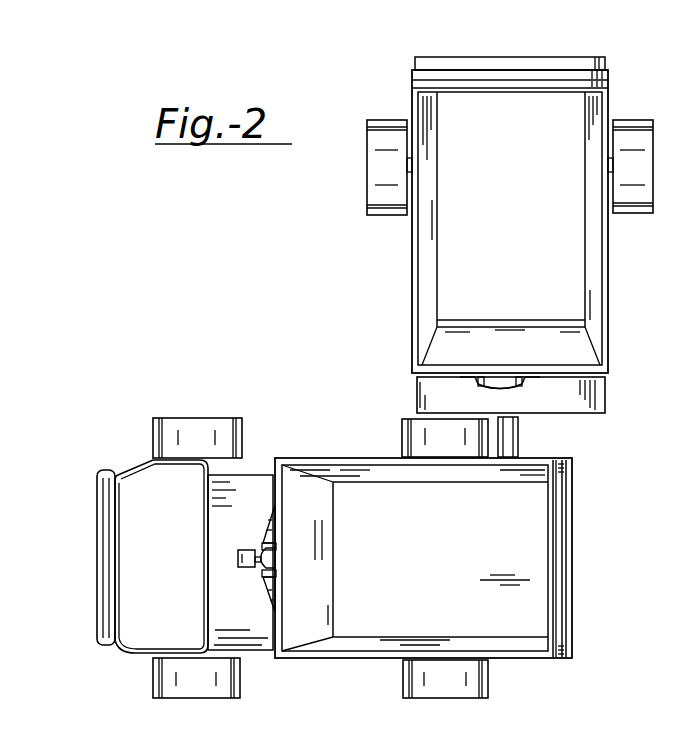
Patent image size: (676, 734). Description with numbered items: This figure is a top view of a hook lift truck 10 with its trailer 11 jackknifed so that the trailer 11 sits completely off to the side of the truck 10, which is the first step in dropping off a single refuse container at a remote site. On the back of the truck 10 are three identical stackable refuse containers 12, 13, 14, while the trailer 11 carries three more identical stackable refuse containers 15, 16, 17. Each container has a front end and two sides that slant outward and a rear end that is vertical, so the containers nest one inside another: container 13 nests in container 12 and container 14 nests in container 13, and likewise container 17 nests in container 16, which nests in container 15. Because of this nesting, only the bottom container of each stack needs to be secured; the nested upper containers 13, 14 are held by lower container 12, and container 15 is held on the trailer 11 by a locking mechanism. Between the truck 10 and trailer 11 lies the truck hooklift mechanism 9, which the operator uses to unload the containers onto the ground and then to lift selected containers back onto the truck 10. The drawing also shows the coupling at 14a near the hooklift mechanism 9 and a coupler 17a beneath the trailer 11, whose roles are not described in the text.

The truck lifting mechanism 9 is at (246, 550).
The hook lift truck 10 is at (126, 458).
The trailer 11 is at (493, 57).
The stackable refuse container 12 is at (572, 569).
The stackable refuse container 13 is at (563, 533).
The stackable refuse container 14 is at (557, 490).
The hitch coupling 14a is at (262, 566).
The stackable refuse container 15 is at (445, 70).
The stackable refuse container 16 is at (437, 78).
The stackable refuse container 17 is at (424, 83).
The coupler 17a is at (511, 388).